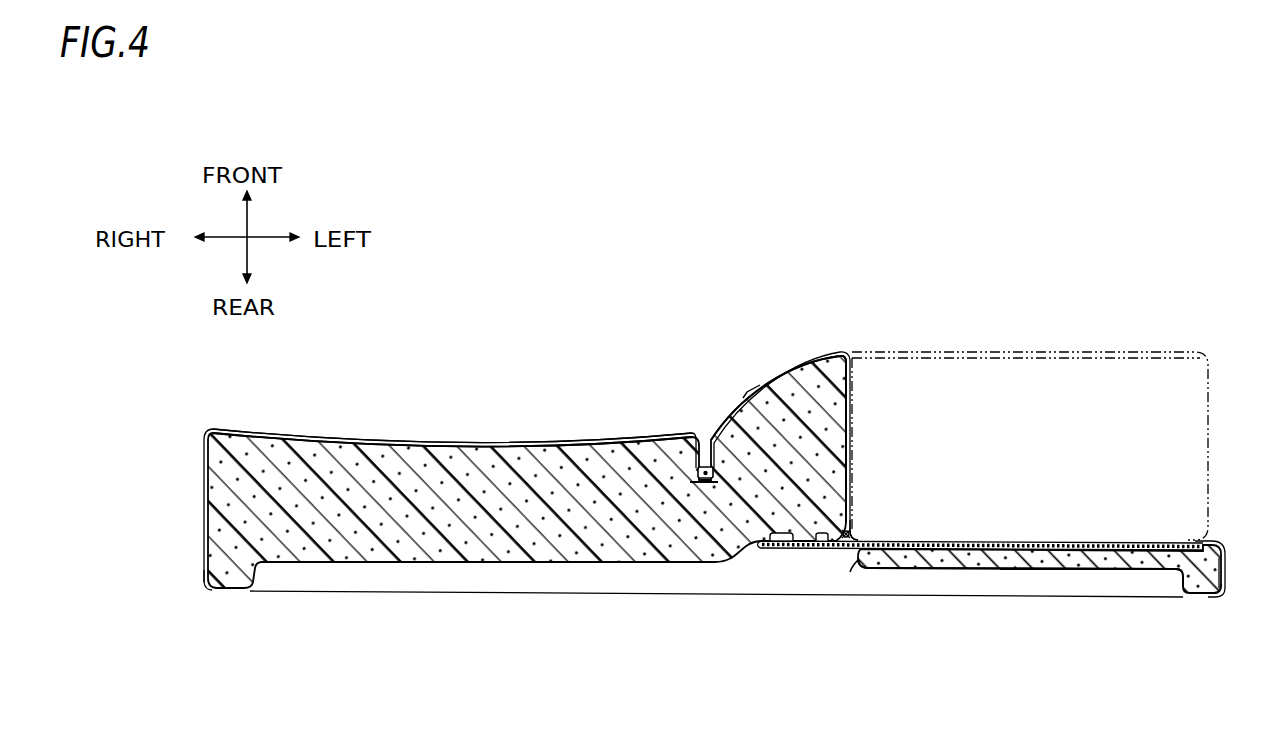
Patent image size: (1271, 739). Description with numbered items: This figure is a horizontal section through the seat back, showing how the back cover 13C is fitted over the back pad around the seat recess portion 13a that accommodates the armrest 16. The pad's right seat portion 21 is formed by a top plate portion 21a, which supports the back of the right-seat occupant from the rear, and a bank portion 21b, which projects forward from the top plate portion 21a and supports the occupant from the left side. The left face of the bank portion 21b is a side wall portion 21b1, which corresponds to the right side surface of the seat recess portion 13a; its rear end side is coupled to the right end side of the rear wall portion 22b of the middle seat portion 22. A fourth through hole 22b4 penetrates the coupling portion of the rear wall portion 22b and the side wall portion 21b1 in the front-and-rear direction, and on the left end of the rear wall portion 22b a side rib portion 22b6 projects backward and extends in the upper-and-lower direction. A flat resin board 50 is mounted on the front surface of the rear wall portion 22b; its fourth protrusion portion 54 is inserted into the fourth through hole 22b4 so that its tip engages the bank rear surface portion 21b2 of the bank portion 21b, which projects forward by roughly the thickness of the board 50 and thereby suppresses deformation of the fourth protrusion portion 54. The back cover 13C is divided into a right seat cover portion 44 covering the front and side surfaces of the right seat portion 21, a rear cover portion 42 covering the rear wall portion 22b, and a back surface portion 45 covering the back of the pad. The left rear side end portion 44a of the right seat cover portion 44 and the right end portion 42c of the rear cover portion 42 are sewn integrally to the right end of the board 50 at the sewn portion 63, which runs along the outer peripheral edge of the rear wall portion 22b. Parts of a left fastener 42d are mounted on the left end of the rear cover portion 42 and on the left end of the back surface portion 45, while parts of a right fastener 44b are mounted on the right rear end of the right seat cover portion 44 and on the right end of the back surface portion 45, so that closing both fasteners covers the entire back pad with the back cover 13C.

The seat recess portion 13a is at (1113, 541).
The back cover 13C is at (452, 409).
The armrest 16 is at (1045, 351).
The right seat portion 21 is at (556, 561).
The top plate portion 21a is at (468, 441).
The bank portion 21b is at (760, 385).
The side wall portion 21b1 is at (847, 452).
The bank rear surface portion 21b2 is at (801, 545).
The middle seat portion 22 is at (950, 569).
The rear wall portion 22b is at (1017, 569).
The fourth through hole 22b4 is at (851, 564).
The side rib portion 22b6 is at (1182, 580).
The rear cover portion 42 is at (1218, 542).
The right end portion of the rear cover portion 42c is at (820, 545).
The left fastener 42d is at (1219, 596).
The right seat cover portion 44 is at (577, 441).
The left rear side end portion of the right seat cover portion 44a is at (844, 520).
The right fastener 44b is at (207, 585).
The back surface portion 45 is at (510, 595).
The board 50 is at (1080, 569).
The fourth protrusion portion 54 is at (780, 545).
The sewn portion 63 is at (850, 533).